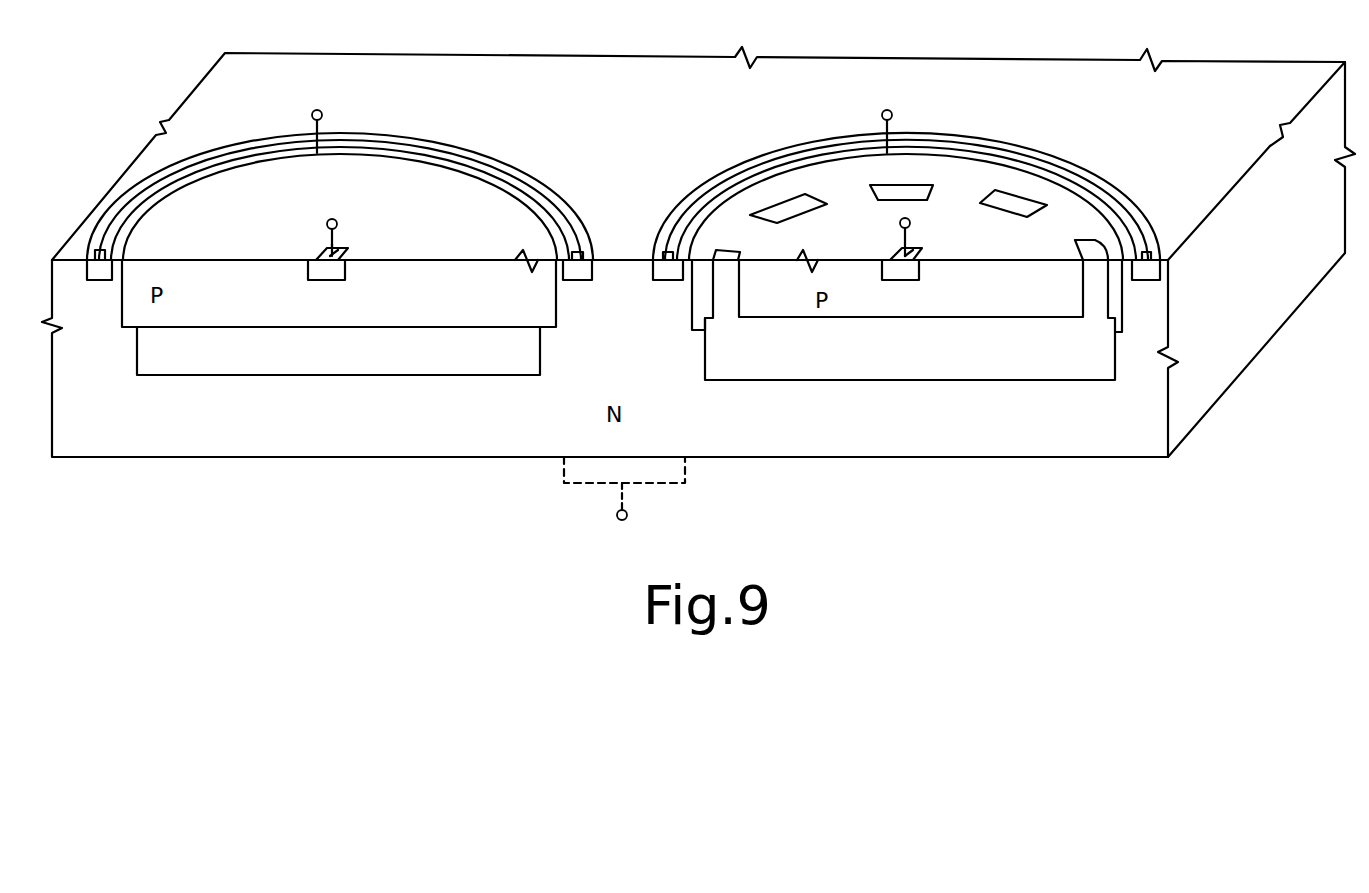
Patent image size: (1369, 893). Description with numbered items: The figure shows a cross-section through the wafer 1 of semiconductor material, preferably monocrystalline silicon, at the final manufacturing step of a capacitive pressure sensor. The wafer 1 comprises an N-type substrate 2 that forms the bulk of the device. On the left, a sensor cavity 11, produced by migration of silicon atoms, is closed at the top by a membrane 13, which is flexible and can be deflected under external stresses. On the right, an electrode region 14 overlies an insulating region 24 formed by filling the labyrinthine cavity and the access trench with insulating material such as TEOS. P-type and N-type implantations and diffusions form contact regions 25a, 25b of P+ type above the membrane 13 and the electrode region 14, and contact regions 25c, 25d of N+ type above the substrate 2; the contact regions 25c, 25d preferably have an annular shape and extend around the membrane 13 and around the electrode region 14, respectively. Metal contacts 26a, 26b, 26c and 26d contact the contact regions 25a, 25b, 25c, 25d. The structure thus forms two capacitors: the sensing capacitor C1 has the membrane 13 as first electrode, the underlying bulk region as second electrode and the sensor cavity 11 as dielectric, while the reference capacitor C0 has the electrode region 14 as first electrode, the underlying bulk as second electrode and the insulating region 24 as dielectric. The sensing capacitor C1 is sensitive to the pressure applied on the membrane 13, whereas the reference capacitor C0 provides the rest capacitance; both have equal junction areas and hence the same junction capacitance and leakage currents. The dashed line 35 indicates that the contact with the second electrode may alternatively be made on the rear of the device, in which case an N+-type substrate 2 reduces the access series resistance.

The wafer 1 is at (1168, 320).
The N-type substrate 2 is at (698, 252).
The sensor cavity 11 is at (338, 351).
The membrane 13 is at (339, 293).
The electrode region 14 is at (911, 288).
The insulating region 24 is at (1162, 183).
The contact region 25a is at (337, 270).
The contact region 25b is at (945, 285).
The contact region 25c is at (520, 178).
The contact region 25d is at (673, 213).
The metal contact 26a is at (345, 251).
The metal contact 26b is at (917, 247).
The metal contact 26c is at (99, 250).
The metal contact 26d is at (827, 152).
The dashed line 35 is at (650, 483).
The reference capacitor C0 is at (1063, 225).
The sensing capacitor C1 is at (238, 228).